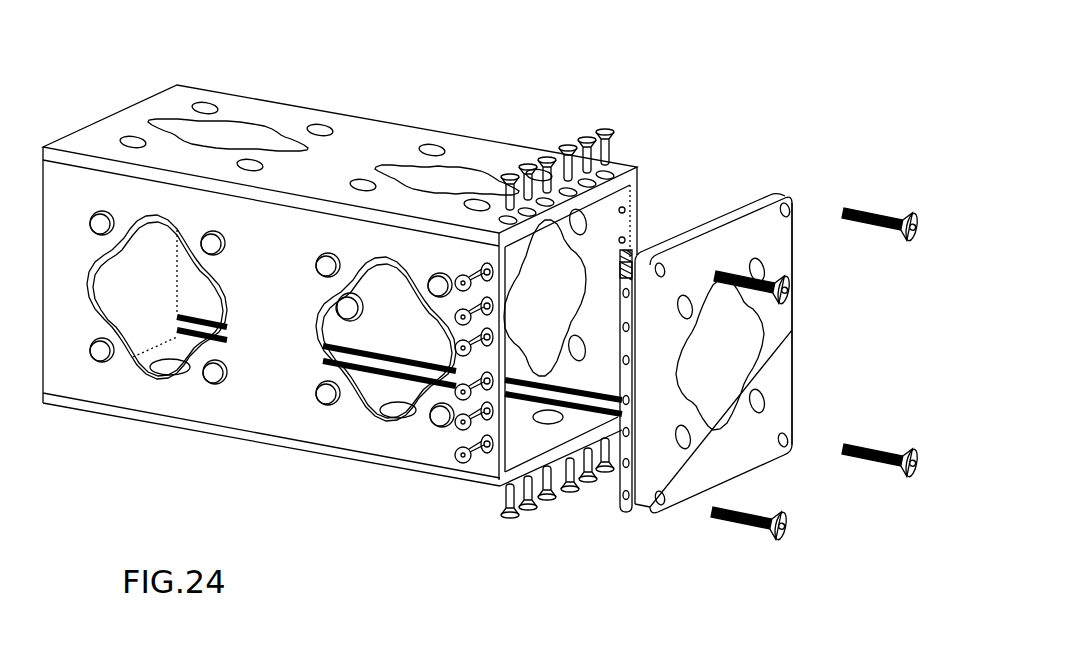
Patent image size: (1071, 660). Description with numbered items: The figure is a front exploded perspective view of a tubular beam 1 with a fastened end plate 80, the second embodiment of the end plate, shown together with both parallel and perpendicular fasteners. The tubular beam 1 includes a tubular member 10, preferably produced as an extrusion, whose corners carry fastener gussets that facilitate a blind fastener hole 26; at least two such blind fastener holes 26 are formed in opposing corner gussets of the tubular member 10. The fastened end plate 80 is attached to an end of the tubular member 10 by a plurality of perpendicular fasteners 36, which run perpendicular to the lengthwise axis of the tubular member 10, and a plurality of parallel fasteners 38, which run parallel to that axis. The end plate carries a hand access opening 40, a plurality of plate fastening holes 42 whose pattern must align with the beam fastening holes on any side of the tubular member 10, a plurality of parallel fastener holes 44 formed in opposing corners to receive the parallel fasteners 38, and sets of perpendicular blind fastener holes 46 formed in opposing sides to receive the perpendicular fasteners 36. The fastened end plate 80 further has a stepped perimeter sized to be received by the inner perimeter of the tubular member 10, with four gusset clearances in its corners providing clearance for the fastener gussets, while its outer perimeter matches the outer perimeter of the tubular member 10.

The tubular beam 1 is at (452, 125).
The tubular member 10 is at (380, 120).
The blind fastener hole 26 is at (638, 168).
The perpendicular fastener 36 is at (517, 525).
The parallel fastener 38 is at (755, 527).
The hand access opening 40 is at (688, 505).
The plate fastening hole 42 is at (793, 388).
The parallel fastener hole 44 is at (783, 455).
The perpendicular blind fastener hole 46 is at (618, 492).
The fastened end plate 80 is at (793, 322).